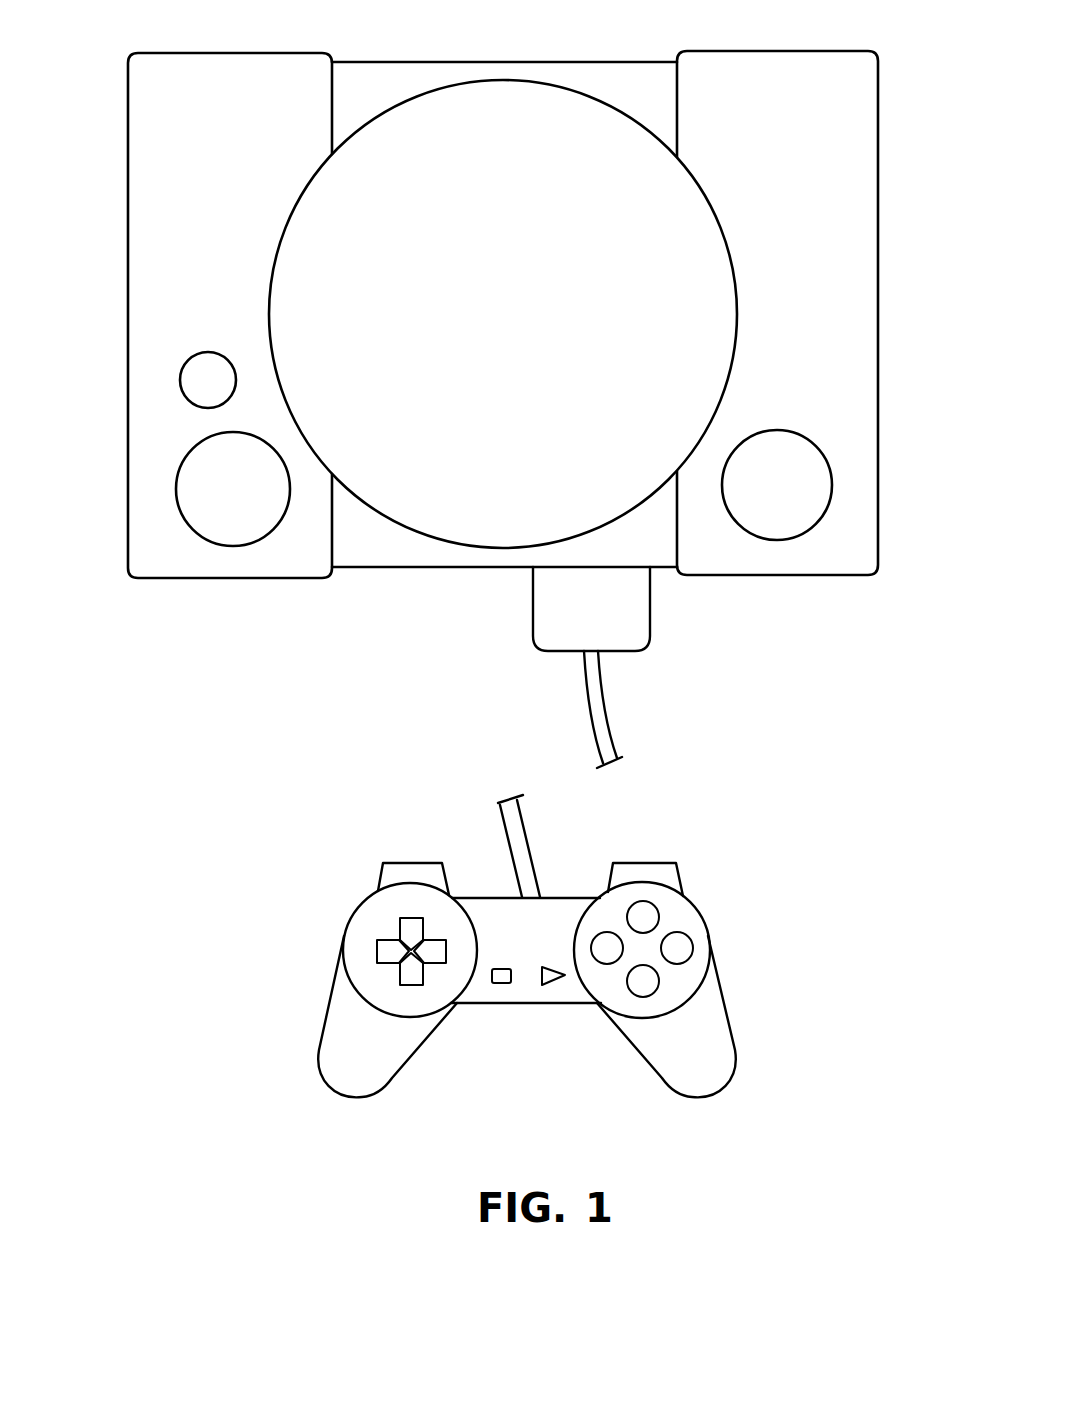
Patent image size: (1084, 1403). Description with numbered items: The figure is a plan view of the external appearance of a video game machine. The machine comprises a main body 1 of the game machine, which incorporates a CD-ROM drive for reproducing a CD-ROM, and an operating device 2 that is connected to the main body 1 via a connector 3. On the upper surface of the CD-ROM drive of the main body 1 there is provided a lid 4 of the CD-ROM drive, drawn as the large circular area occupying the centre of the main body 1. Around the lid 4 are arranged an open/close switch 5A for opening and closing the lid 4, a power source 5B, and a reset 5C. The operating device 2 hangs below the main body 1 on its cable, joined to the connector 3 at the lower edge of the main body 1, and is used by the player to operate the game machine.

The main body 1 is at (878, 297).
The operating device 2 is at (708, 918).
The connector 3 is at (533, 622).
The lid 4 is at (592, 97).
The open/close switch 5A is at (777, 541).
The power source 5B is at (232, 547).
The reset 5C is at (180, 380).